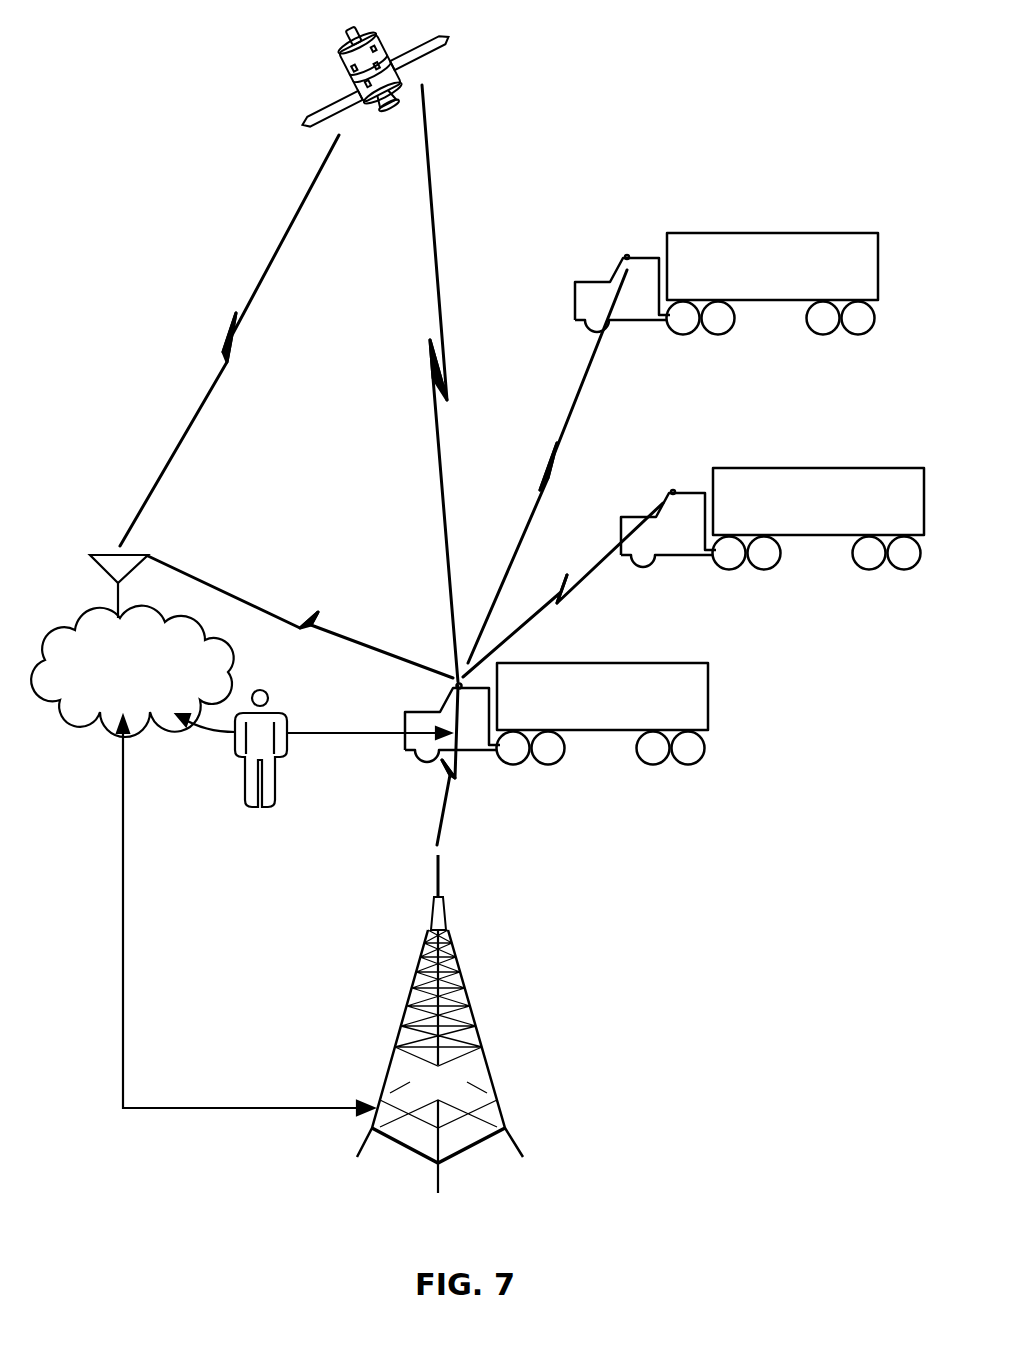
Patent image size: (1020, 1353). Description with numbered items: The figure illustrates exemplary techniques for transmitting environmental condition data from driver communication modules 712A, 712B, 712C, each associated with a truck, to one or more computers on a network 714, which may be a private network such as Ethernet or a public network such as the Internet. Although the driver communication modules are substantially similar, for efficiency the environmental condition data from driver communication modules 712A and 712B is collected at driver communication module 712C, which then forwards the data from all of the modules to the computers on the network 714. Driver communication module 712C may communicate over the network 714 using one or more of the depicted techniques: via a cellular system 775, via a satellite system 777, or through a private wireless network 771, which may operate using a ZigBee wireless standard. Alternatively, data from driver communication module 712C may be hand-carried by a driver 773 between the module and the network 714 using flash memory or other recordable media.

The satellite system 777 is at (350, 82).
The driver communication module 712A is at (630, 254).
The driver communication module 712B is at (676, 491).
The driver communication module 712C is at (457, 680).
The private wireless network 771 is at (113, 578).
The network 714 is at (157, 689).
The driver 773 is at (260, 740).
The cellular system 775 is at (461, 1096).